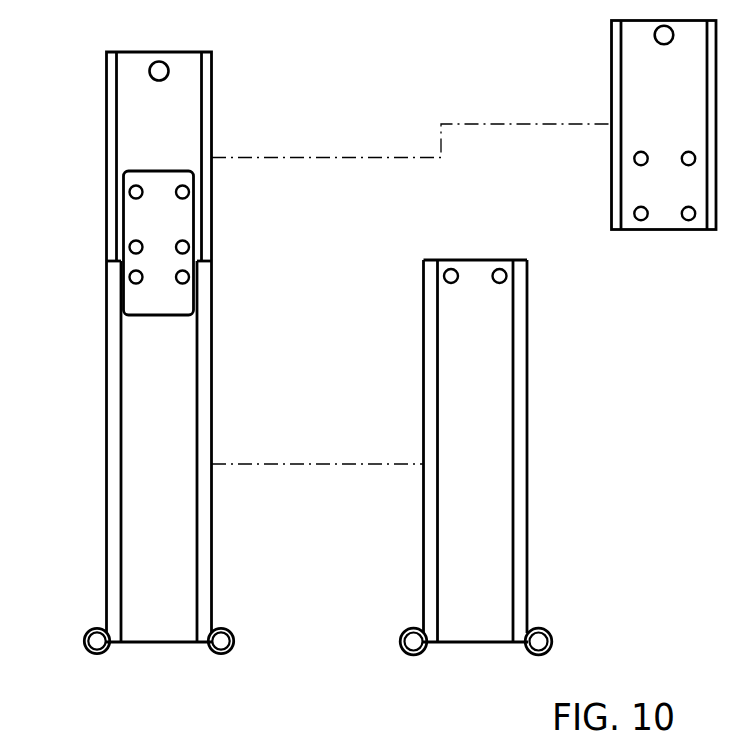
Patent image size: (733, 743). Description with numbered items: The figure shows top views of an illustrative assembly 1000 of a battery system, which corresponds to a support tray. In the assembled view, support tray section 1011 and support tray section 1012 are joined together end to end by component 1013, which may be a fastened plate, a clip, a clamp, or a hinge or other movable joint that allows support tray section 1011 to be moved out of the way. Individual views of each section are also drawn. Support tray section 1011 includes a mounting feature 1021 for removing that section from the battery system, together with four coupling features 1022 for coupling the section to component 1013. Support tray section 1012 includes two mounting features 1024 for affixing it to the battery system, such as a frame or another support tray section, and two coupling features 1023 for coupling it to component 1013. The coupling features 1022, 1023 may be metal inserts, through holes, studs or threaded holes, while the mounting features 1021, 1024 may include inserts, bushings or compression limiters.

The assembly 1000 is at (140, 33).
The support tray section 1011 is at (113, 132).
The support tray section 1012 is at (107, 425).
The component 1013 is at (121, 300).
The mounting feature 1021 is at (655, 40).
The coupling features 1022 is at (633, 162).
The coupling features 1023 is at (443, 278).
The mounting features 1024 is at (400, 643).